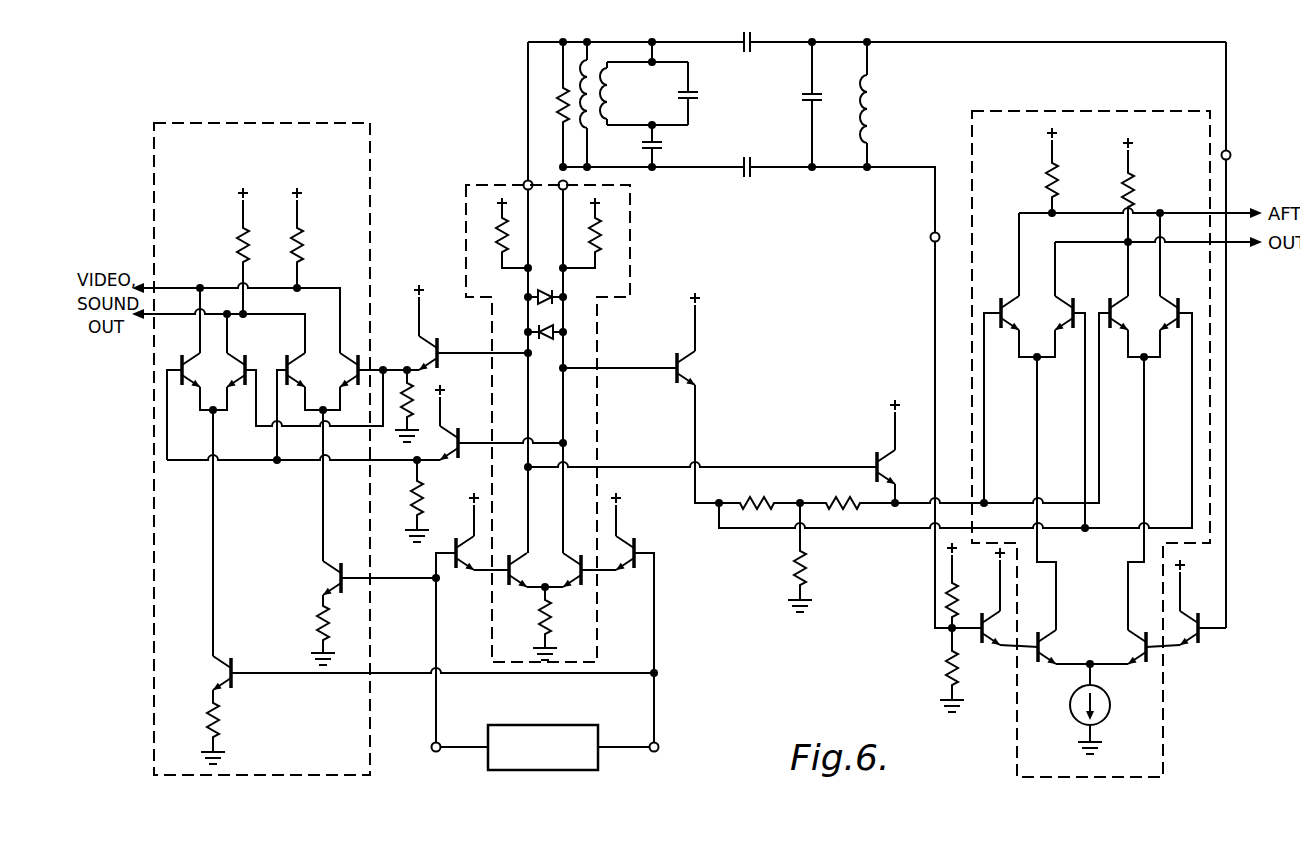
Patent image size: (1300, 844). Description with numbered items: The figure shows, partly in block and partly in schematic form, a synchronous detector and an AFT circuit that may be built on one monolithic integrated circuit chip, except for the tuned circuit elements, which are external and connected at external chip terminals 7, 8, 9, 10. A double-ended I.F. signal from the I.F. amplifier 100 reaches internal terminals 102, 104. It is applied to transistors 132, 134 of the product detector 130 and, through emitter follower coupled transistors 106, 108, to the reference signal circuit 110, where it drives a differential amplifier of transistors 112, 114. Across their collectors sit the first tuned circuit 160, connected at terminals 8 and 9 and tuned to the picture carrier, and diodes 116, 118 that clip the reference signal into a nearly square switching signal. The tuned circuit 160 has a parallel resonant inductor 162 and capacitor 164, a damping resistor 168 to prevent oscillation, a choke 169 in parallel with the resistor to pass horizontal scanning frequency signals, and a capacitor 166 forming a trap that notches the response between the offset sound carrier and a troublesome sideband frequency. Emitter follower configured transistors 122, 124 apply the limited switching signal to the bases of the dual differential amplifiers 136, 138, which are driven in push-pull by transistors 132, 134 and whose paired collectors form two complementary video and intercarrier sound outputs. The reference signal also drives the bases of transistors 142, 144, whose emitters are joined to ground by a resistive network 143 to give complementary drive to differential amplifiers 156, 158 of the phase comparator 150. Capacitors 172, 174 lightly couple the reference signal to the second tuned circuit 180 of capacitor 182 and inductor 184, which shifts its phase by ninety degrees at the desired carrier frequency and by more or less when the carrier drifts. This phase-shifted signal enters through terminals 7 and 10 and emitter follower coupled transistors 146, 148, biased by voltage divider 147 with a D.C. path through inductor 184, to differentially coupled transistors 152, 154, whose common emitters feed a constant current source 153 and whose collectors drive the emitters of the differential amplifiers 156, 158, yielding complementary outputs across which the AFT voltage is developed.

The external chip terminal 7 is at (939, 233).
The external chip terminal 8 is at (560, 180).
The external chip terminal 9 is at (524, 180).
The external chip terminal 10 is at (1231, 153).
The I.F. amplifier 100 is at (600, 768).
The internal terminal 102 is at (432, 751).
The internal terminal 104 is at (660, 752).
The emitter follower coupled transistor 106 is at (451, 538).
The emitter follower coupled transistor 108 is at (639, 537).
The reference signal circuit 110 is at (466, 185).
The differential amplifier transistor 112 is at (515, 570).
The differential amplifier transistor 114 is at (569, 558).
The diode 116 is at (545, 288).
The diode 118 is at (542, 340).
The emitter follower configured transistor 122 is at (432, 350).
The emitter follower configured transistor 124 is at (456, 444).
The product detector 130 is at (218, 123).
The transistor 132 is at (220, 673).
The transistor 134 is at (339, 578).
The differential amplifier 136 is at (230, 378).
The differential amplifier 138 is at (340, 378).
The transistor 142 is at (697, 364).
The resistive network 143 is at (813, 497).
The transistor 144 is at (893, 462).
The emitter follower coupled transistor 146 is at (980, 610).
The voltage divider 147 is at (925, 615).
The emitter follower coupled transistor 148 is at (1198, 611).
The AFT phase comparator 150 is at (1030, 111).
The differentially coupled transistor 152 is at (1055, 640).
The constant current source 153 is at (1110, 703).
The differentially coupled transistor 154 is at (1128, 640).
The differential amplifier 156 is at (1054, 324).
The differential amplifier 158 is at (1160, 324).
The first tuned circuit 160 is at (668, 34).
The inductor 162 is at (613, 88).
The capacitor 164 is at (678, 100).
The capacitor 166 is at (638, 146).
The damping resistor 168 is at (551, 102).
The choke 169 is at (576, 42).
The capacitor 172 is at (746, 57).
The capacitor 174 is at (747, 152).
The second tuned circuit 180 is at (916, 136).
The capacitor 182 is at (802, 98).
The inductor 184 is at (870, 96).